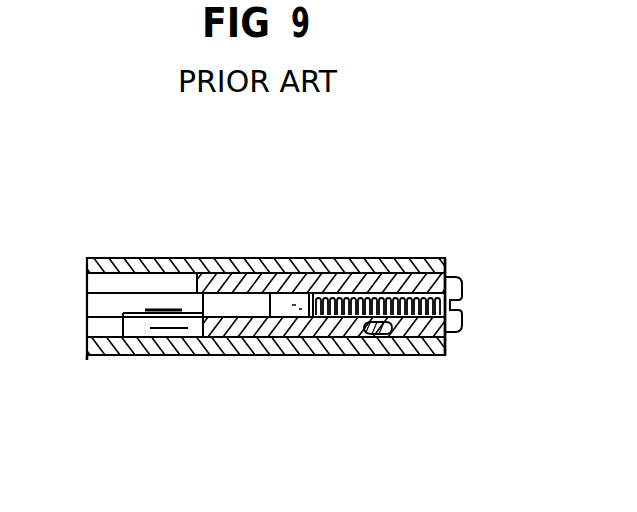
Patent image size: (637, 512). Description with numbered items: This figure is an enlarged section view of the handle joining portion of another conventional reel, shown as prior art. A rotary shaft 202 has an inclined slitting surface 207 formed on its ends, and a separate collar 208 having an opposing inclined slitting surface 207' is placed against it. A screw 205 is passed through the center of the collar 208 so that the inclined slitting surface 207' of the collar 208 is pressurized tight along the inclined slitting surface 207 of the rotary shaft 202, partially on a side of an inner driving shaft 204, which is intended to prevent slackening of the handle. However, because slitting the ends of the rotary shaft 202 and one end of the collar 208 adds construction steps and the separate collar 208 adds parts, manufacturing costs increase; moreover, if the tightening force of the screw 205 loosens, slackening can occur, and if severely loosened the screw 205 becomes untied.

The rotary shaft 202 is at (125, 337).
The inner driving shaft 204 is at (275, 258).
The screw 205 is at (421, 282).
The inclined slitting surface 207 is at (324, 373).
The inclined slitting surface 207' is at (413, 376).
The collar 208 is at (381, 280).